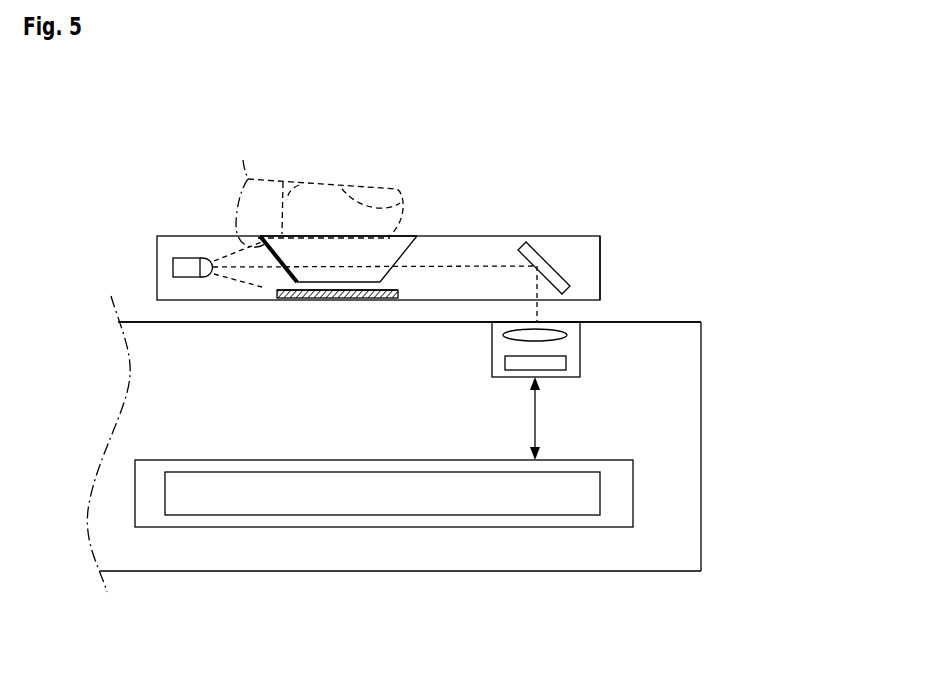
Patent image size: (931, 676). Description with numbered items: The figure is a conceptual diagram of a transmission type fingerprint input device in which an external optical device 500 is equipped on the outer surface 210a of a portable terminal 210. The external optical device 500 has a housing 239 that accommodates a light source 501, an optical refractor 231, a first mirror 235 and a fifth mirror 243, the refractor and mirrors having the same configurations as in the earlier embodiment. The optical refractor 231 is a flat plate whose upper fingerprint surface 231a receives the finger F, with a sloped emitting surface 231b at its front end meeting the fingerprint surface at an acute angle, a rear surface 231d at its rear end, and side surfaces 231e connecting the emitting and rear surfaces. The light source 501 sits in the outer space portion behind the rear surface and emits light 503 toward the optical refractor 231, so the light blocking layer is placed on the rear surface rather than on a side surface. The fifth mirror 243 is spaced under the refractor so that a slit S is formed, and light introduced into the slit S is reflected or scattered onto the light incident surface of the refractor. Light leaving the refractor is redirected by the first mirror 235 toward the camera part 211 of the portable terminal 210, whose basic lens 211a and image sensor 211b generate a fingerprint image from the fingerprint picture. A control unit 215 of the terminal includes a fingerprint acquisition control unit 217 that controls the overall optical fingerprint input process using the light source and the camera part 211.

The external optical device 500 is at (613, 243).
The housing 239 is at (600, 277).
The light source 501 is at (173, 265).
The light beam 503 is at (260, 238).
The optical refractor 231 is at (371, 180).
The fingerprint surface 231a is at (343, 235).
The emitting surface 231b is at (397, 262).
The rear surface 231d is at (280, 247).
The side surface 231e is at (322, 247).
The finger F is at (347, 190).
The slit S is at (277, 289).
The fifth mirror 243 is at (277, 295).
The first mirror 235 is at (547, 263).
The portable terminal 210 is at (717, 446).
The outer surface 210a is at (643, 322).
The camera part 211 is at (548, 350).
The basic lens 211a is at (501, 335).
The image sensor 211b is at (505, 362).
The control unit 215 is at (384, 541).
The fingerprint acquisition control unit 217 is at (517, 516).